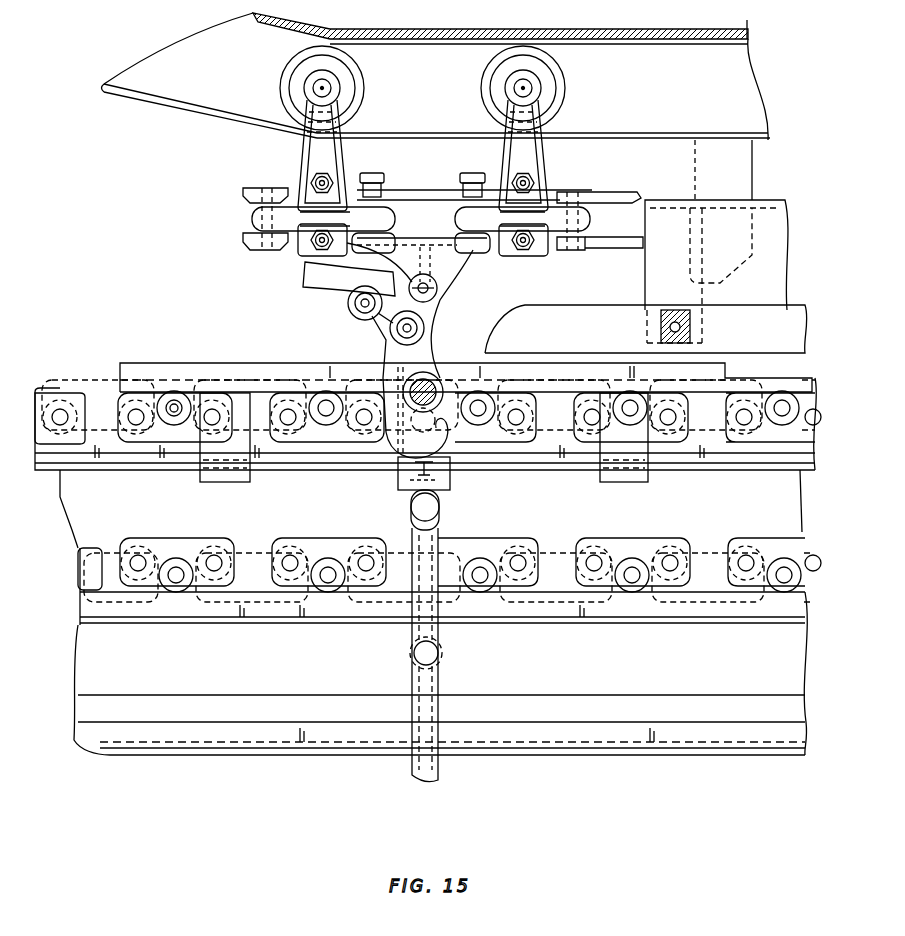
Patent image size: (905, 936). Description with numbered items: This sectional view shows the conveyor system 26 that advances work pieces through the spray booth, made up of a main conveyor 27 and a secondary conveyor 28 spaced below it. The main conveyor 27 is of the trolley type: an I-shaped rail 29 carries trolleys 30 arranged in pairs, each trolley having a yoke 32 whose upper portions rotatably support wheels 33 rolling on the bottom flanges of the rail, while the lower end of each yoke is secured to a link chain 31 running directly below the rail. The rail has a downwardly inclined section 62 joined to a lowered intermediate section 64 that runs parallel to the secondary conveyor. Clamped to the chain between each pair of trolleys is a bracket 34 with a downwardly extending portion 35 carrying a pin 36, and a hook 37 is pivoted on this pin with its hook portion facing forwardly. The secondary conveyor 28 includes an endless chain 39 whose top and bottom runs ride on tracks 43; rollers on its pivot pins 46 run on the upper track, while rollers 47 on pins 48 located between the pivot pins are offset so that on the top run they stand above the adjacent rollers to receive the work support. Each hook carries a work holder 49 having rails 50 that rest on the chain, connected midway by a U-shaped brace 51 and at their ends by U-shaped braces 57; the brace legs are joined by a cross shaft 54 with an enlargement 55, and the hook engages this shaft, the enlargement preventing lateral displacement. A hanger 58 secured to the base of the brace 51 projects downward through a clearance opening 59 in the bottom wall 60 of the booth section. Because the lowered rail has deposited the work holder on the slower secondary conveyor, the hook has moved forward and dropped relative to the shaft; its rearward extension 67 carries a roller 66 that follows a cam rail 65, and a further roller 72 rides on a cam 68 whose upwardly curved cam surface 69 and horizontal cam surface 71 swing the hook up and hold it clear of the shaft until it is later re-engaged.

The conveyor system 26 is at (178, 305).
The main conveyor 27 is at (406, 188).
The secondary conveyor 28 is at (428, 389).
The rail 29 is at (206, 80).
The trolleys 30 is at (449, 178).
The chain 31 is at (262, 243).
The yoke 32 is at (326, 155).
The wheels 33 is at (357, 85).
The bracket 34 is at (411, 236).
The portion 35 is at (458, 254).
The pin 36 is at (437, 288).
The hook 37 is at (433, 323).
The chain 39 is at (250, 542).
The tracks 43 is at (757, 450).
The pivot pins 46 is at (432, 417).
The rollers 47 is at (172, 405).
The pins 48 is at (180, 405).
The work holder 49 is at (543, 363).
The rails 50 is at (304, 378).
The U-shaped brace 51 is at (452, 475).
The cross shafts 54 is at (441, 385).
The enlargements 55 is at (426, 378).
The U-shaped braces 57 is at (253, 472).
The hanger 58 is at (440, 684).
The clearance opening 59 is at (540, 736).
The bottom wall 60 is at (603, 748).
The downwardly inclined section 62 is at (262, 104).
The intermediate section 64 is at (748, 118).
The cam rails 65 is at (320, 284).
The rollers 66 is at (360, 311).
The rearward extensions 67 is at (383, 323).
The cams 68 is at (733, 318).
The cam surfaces 69 is at (518, 316).
The cam surfaces 71 is at (605, 308).
The rollers 72 is at (407, 318).